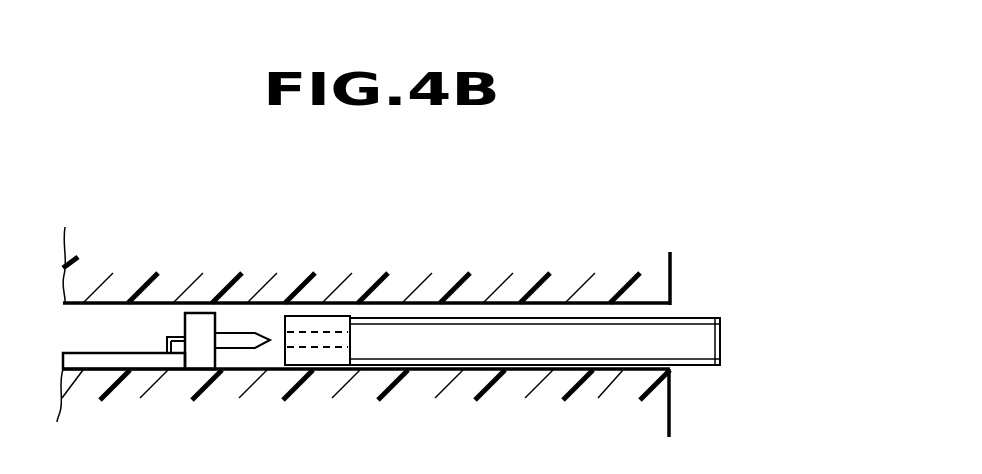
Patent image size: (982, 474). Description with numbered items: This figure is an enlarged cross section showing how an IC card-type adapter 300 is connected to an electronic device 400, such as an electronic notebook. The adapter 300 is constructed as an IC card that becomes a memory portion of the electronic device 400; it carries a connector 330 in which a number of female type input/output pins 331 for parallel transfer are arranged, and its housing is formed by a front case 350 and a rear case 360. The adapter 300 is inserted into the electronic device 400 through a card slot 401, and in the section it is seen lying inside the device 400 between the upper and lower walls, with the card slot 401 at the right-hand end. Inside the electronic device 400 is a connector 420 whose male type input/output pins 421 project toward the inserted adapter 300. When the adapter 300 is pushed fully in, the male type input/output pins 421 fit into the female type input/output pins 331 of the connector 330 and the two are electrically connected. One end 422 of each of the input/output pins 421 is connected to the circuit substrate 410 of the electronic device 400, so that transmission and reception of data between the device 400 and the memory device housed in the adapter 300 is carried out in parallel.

The IC card-type adapter 300 is at (718, 347).
The connector 330 is at (295, 357).
The female type input/output pins 331 is at (328, 347).
The front case 350 is at (695, 325).
The rear case 360 is at (682, 372).
The electronic device 400 is at (653, 272).
The card slot 401 is at (658, 315).
The circuit substrate 410 is at (102, 360).
The connector 420 is at (200, 352).
The male type input/output pins 421 is at (242, 332).
The one end of input/output pin 422 is at (177, 337).